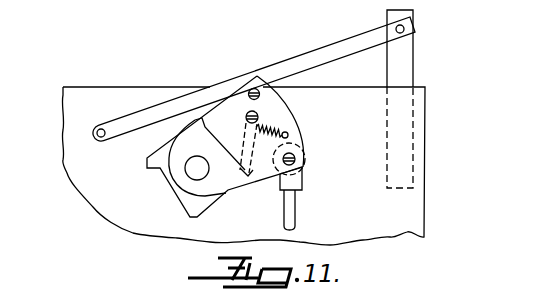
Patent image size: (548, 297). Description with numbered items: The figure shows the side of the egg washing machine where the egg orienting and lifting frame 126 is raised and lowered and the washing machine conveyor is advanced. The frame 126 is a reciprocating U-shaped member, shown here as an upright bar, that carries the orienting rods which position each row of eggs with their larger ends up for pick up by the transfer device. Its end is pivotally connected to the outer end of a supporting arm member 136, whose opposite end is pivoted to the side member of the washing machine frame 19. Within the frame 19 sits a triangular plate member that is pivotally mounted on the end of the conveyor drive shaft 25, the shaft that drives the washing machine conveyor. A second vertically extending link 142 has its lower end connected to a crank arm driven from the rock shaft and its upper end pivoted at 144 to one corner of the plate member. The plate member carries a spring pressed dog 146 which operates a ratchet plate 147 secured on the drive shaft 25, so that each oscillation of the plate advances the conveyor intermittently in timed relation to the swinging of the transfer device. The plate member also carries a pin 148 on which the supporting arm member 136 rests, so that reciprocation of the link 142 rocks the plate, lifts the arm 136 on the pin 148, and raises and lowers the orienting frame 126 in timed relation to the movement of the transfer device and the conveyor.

The washing machine frame 19 is at (63, 170).
The conveyor drive shaft 25 is at (187, 173).
The egg orienting and lifting frame 126 is at (415, 50).
The supporting arm member 136 is at (148, 104).
The second vertically extending link 142 is at (296, 209).
The pivot 144 is at (297, 157).
The spring pressed dog 146 is at (261, 176).
The ratchet plate 147 is at (159, 169).
The pin 148 is at (261, 95).